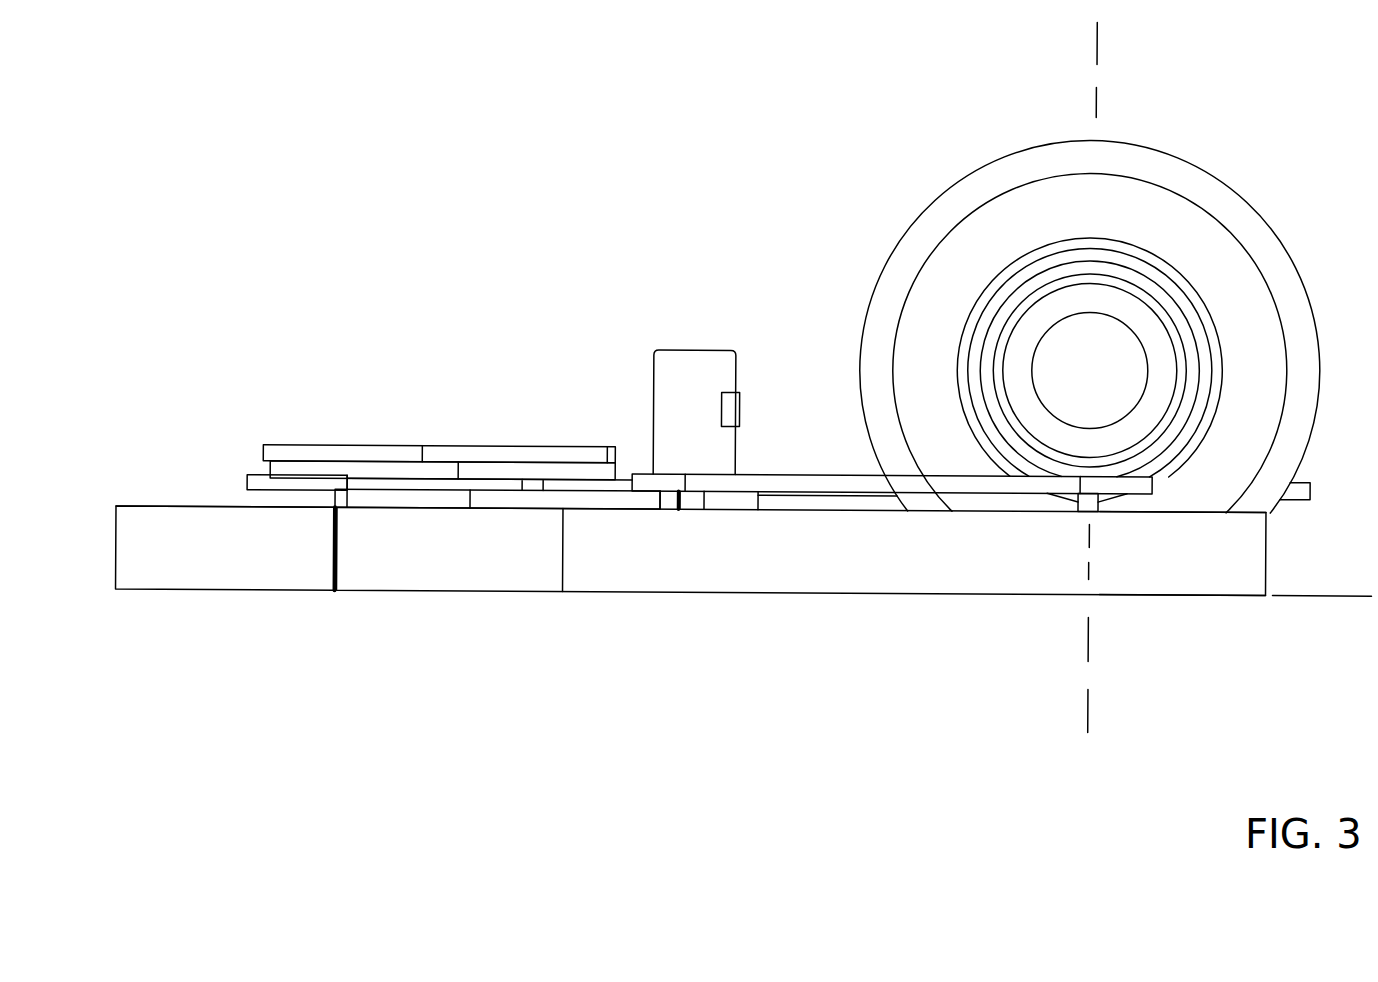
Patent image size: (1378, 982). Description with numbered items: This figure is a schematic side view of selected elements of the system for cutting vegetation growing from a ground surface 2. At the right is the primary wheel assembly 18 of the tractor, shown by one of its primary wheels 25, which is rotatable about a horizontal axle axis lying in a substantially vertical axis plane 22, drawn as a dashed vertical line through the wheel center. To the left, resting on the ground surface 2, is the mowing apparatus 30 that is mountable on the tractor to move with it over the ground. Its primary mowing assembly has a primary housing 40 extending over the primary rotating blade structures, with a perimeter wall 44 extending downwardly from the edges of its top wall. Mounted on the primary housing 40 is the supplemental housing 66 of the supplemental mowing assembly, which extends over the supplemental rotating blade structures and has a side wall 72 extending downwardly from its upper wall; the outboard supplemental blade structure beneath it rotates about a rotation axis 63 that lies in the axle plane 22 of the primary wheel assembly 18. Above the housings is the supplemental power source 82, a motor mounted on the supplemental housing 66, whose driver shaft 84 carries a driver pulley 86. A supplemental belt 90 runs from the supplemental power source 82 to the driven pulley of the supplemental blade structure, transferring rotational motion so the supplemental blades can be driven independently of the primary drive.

The ground surface 2 is at (1323, 590).
The primary wheel assembly 18 is at (1232, 139).
The vertical axis plane 22 is at (1094, 39).
The primary wheel 25 is at (1240, 214).
The mowing apparatus 30 is at (464, 274).
The primary housing 40 is at (211, 620).
The perimeter wall 44 is at (198, 529).
The rotation axis 63 is at (1088, 564).
The supplemental housing 66 is at (849, 612).
The side wall 72 is at (1227, 561).
The supplemental power source 82 is at (717, 369).
The driver shaft 84 is at (703, 498).
The driver pulley 86 is at (660, 489).
The supplemental belt 90 is at (832, 476).